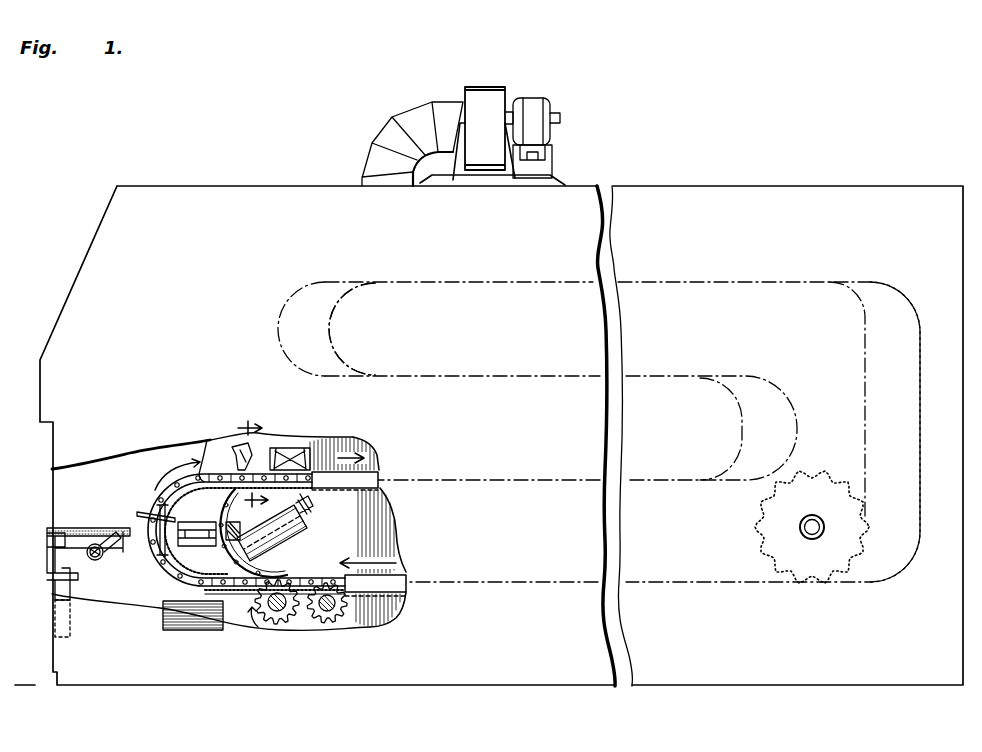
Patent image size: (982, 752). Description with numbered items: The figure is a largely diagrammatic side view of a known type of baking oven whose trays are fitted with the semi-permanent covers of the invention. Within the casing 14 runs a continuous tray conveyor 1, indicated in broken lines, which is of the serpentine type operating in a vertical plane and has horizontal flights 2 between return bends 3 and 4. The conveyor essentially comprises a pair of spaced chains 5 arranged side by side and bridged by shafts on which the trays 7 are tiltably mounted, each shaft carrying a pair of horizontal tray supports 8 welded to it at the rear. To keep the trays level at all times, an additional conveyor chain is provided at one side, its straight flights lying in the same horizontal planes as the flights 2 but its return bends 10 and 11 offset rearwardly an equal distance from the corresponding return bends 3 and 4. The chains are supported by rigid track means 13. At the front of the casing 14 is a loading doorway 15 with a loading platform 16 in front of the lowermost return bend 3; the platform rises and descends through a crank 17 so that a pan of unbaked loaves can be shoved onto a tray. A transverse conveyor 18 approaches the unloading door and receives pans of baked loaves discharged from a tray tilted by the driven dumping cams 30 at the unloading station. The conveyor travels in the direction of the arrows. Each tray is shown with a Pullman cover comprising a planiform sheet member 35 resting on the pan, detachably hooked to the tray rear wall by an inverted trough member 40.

The continuous tray conveyor 1 is at (546, 274).
The horizontal flights 2 is at (470, 282).
The return bend 3 is at (278, 318).
The return bend 4 is at (870, 446).
The spaced chains 5 is at (203, 449).
The tray 7 is at (268, 448).
The horizontal tray supports 8 is at (180, 578).
The return bend 10 is at (333, 330).
The return bend 11 is at (922, 392).
The rigid track means 13 is at (365, 474).
The casing 14 is at (300, 197).
The loading doorway 15 is at (42, 447).
The loading platform 16 is at (83, 530).
The crank 17 is at (100, 560).
The transverse conveyor 18 is at (180, 616).
The dumping cams 30 is at (290, 573).
The planiform sheet member 35 is at (292, 448).
The inverted trough member 40 is at (330, 442).